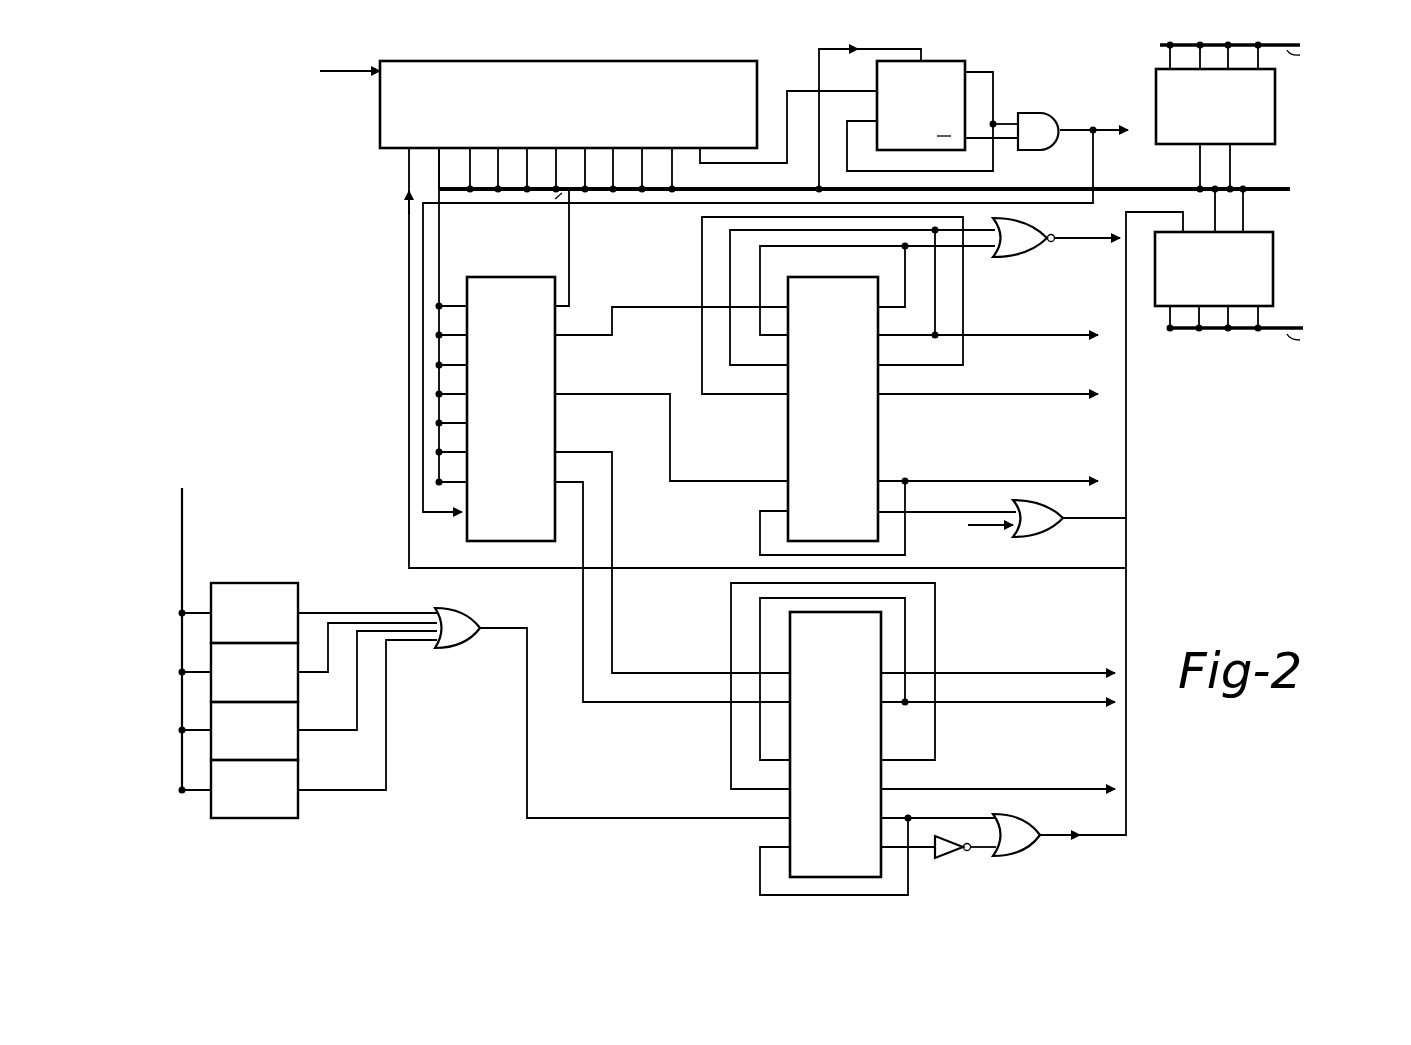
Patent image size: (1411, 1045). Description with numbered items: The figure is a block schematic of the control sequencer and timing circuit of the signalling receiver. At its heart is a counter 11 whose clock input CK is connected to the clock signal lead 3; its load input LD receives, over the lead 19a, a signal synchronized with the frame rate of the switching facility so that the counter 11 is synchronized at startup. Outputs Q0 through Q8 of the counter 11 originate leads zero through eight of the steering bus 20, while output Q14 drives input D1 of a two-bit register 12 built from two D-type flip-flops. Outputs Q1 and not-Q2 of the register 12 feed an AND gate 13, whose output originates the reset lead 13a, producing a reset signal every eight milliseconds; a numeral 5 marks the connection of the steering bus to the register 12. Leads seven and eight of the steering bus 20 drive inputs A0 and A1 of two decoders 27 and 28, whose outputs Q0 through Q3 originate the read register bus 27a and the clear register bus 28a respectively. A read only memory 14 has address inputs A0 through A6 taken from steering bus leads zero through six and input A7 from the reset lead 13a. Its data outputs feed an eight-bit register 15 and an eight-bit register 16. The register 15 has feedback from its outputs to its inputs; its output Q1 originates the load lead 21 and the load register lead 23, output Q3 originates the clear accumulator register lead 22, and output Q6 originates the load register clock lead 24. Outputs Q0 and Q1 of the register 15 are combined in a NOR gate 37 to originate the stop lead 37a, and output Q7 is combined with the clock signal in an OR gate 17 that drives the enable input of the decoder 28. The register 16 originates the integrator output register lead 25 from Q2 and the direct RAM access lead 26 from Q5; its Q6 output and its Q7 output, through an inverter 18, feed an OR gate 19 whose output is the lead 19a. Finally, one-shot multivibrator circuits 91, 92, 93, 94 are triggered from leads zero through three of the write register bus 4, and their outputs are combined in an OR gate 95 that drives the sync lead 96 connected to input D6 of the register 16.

The clock signal lead 3 is at (346, 73).
The write register bus 4 is at (184, 555).
The steering bus connection to 2-bit register clock 5 is at (816, 188).
The counter 11 is at (390, 124).
The two-bit register 12 is at (965, 62).
The AND gate 13 is at (1046, 117).
The reset lead 13a is at (780, 312).
The read only memory (ROM) 14 is at (508, 298).
The 8-bit register 15 is at (842, 298).
The 8-bit register 16 is at (790, 830).
The OR gate 17 is at (1056, 530).
The inverter 18 is at (950, 860).
The OR gate 19 is at (1025, 855).
The lead 19a is at (1105, 838).
The steering bus 20 is at (1262, 189).
The load lead 21 is at (1075, 332).
The clear accumulator register lead 22 is at (1030, 394).
The load register lead 23 is at (1092, 668).
The load register clock lead 24 is at (1070, 483).
The integrator output register lead 25 is at (1085, 704).
The direct RAM access lead 26 is at (1060, 789).
The decoder 27 is at (1275, 128).
The read register bus 27a is at (1166, 45).
The decoder 28 is at (1273, 270).
The clear register bus 28a is at (1245, 333).
The NOR gate 37 is at (1020, 255).
The stop lead 37a is at (1088, 242).
The one-shot multivibrator circuit 91 is at (298, 596).
The one-shot multivibrator circuit 92 is at (298, 686).
The one-shot multivibrator circuit 93 is at (298, 744).
The one-shot multivibrator circuit 94 is at (298, 804).
The OR gate 95 is at (464, 645).
The sync lead 96 is at (527, 760).